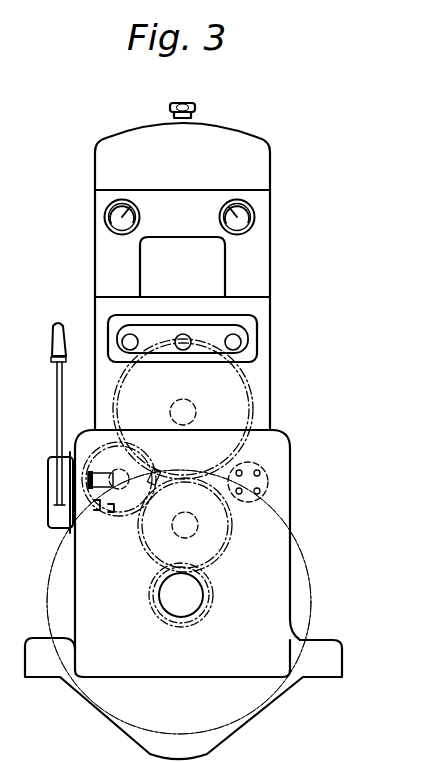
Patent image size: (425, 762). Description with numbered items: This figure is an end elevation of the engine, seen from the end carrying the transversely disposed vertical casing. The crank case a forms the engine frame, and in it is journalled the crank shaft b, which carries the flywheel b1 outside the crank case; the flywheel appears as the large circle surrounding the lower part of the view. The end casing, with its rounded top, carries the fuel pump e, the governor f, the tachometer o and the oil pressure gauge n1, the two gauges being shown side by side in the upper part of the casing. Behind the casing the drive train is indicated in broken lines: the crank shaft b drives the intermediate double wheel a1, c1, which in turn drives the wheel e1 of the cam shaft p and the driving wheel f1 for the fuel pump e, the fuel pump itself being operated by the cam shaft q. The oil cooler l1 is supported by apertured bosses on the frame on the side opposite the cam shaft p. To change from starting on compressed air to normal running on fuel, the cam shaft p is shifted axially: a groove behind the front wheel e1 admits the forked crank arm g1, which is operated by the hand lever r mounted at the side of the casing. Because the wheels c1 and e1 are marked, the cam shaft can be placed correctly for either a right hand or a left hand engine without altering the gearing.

The oil pressure gauge n1 is at (105, 218).
The tachometer o is at (254, 217).
The fuel pump e is at (213, 282).
The governor f is at (248, 353).
The driving wheel for the fuel pump f1 is at (143, 385).
The cam shaft q is at (193, 410).
The cam shaft p is at (120, 472).
The hand lever r is at (57, 445).
The crank arm g1 is at (92, 482).
The wheel of the cam shaft e1 is at (100, 513).
The oil cooler l1 is at (257, 480).
The intermediate double wheel a1 is at (210, 520).
The intermediate double wheel c1 is at (269, 515).
The crank case a is at (179, 602).
The crank shaft b is at (188, 592).
The flywheel b1 is at (305, 593).